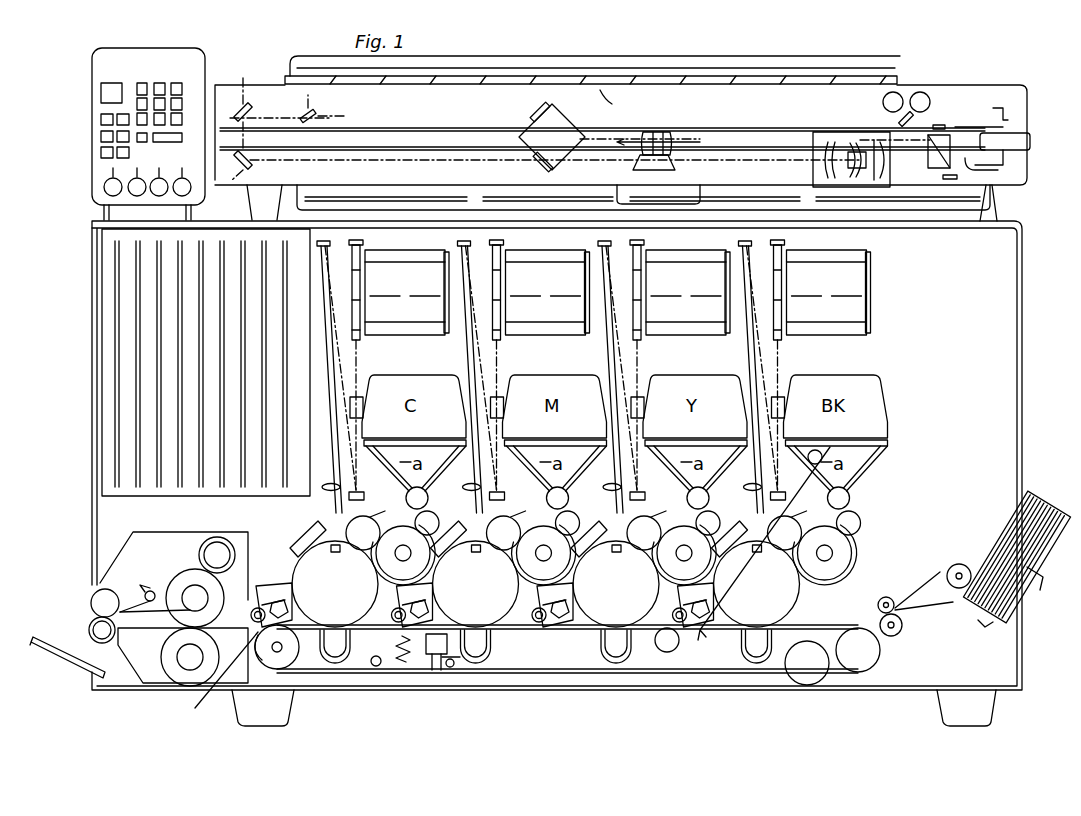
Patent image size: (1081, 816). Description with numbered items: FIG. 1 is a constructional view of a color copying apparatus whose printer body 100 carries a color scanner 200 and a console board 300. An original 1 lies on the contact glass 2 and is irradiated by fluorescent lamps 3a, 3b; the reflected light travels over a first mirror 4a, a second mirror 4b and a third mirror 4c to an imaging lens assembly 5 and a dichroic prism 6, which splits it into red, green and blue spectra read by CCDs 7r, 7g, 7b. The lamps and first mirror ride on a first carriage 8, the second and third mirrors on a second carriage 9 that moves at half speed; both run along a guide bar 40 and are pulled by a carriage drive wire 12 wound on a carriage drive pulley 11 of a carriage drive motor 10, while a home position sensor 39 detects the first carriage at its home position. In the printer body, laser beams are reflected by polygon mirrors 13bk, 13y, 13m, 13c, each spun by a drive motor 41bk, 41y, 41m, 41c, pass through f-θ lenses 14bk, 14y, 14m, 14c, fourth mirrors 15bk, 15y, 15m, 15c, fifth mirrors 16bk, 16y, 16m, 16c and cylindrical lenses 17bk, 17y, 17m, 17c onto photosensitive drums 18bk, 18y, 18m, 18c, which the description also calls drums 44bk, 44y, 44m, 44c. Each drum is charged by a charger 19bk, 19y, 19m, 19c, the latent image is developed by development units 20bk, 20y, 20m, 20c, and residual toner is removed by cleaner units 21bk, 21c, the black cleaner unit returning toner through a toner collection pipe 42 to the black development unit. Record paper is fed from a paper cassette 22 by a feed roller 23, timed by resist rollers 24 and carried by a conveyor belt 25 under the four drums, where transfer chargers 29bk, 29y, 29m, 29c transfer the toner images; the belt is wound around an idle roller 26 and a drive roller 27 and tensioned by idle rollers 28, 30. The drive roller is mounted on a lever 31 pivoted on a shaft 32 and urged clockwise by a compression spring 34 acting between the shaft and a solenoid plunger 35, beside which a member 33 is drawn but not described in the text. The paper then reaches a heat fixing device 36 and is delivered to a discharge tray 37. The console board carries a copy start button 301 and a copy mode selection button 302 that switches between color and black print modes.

The printer body 100 is at (92, 221).
The console board 300 is at (119, 115).
The copy start button 301 is at (100, 93).
The copy mode selection button 302 is at (100, 119).
The color scanner 200 is at (686, 55).
The original 1 is at (745, 77).
The platen (contact glass) 2 is at (756, 78).
The fluorescent lamp 3a is at (920, 91).
The fluorescent lamp 3b is at (892, 91).
The first mirror 4a is at (316, 115).
The second mirror 4b is at (534, 110).
The third mirror 4c is at (234, 180).
The imaging lens assembly 5 is at (850, 130).
The dichroic prism 6 is at (938, 134).
The CCD 7r is at (945, 125).
The CCD 7g is at (945, 180).
The CCD 7b is at (1000, 170).
The first carriage 8 is at (985, 133).
The second carriage 9 is at (556, 110).
The carriage drive motor 10 is at (745, 188).
The carriage drive pulley 11 is at (660, 135).
The carriage drive wire 12 is at (700, 144).
The home position sensor 39 is at (1008, 112).
The guide bar 40 is at (404, 127).
The polygon mirror 13c is at (356, 241).
The polygon mirror 13m is at (497, 241).
The polygon mirror 13y is at (637, 241).
The polygon mirror 13bk is at (779, 241).
The f-θ lens 14c is at (358, 396).
The f-θ lens 14m is at (498, 396).
The f-θ lens 14y is at (639, 396).
The f-θ lens 14bk is at (779, 396).
The fourth mirror 15c is at (367, 495).
The fourth mirror 15m is at (478, 522).
The fourth mirror 15y is at (619, 522).
The fourth mirror 15bk is at (790, 497).
The fifth mirror 16c is at (324, 242).
The fifth mirror 16m is at (463, 243).
The fifth mirror 16y is at (603, 243).
The fifth mirror 16bk is at (744, 243).
The cylindrical lens 17c is at (322, 487).
The cylindrical lens 17m is at (463, 487).
The cylindrical lens 17y is at (604, 487).
The cylindrical lens 17bk is at (746, 487).
The photosensitive drum 18c is at (296, 576).
The photosensitive drum 18m is at (516, 627).
The photosensitive drum 18y is at (646, 632).
The photosensitive drum 18bk is at (798, 590).
The charger 19c is at (294, 546).
The charger 19m is at (430, 521).
The charger 19y is at (571, 521).
The charger 19bk is at (710, 521).
The cyan development unit 20c is at (347, 524).
The magenta development unit 20m is at (505, 516).
The yellow development unit 20y is at (646, 516).
The black development unit 20bk is at (852, 505).
The cleaner unit 21c is at (208, 683).
The cleaner unit 21bk is at (705, 636).
The paper cassette 22 is at (976, 622).
The feed roller 23 is at (959, 564).
The resist rollers 24 is at (887, 597).
The conveyor belt 25 is at (880, 623).
The idle roller 26 is at (880, 650).
The drive roller 27 is at (250, 688).
The idle roller 28 is at (838, 680).
The transfer device (charger) 29c is at (340, 660).
The transfer device (charger) 29m is at (480, 660).
The transfer device (charger) 29y is at (616, 660).
The transfer device (charger) 29bk is at (758, 660).
The idle roller 30 is at (672, 652).
The lever 31 is at (310, 668).
The shaft 32 is at (378, 667).
The tension block 33 is at (438, 660).
The compression spring 34 is at (405, 665).
The plunger 35 is at (455, 665).
The heat fixing device 36 is at (120, 565).
The discharge tray 37 is at (48, 640).
The drive motor 41c is at (430, 336).
The drive motor 41m is at (570, 336).
The drive motor 41y is at (711, 336).
The drive motor 41bk is at (852, 336).
The toner collection pipe 42 is at (824, 460).
The photosensitive drum 44c is at (336, 553).
The photosensitive drum 44m is at (476, 553).
The photosensitive drum 44y is at (617, 553).
The photosensitive drum 44bk is at (757, 553).